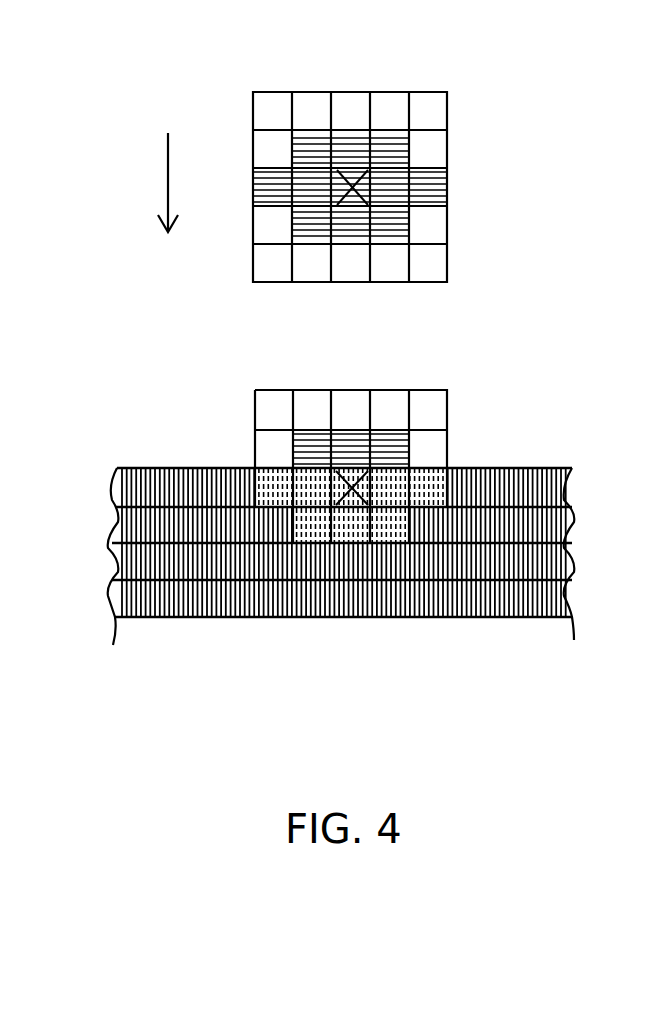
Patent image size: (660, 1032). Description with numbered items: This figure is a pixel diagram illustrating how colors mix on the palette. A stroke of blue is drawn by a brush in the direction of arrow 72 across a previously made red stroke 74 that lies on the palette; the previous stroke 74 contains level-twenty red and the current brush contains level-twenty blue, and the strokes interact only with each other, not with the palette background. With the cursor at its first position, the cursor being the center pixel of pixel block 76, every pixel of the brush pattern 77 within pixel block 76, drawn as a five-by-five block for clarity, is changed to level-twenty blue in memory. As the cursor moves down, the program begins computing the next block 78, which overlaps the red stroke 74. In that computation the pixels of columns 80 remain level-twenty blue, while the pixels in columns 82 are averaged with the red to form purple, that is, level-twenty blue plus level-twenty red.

The arrow 72 is at (168, 192).
The red stroke 74 is at (505, 598).
The pixel block 76 is at (456, 188).
The brush pattern 77 is at (393, 226).
The block 78 is at (310, 604).
The columns 80 is at (254, 450).
The columns 82 is at (254, 558).